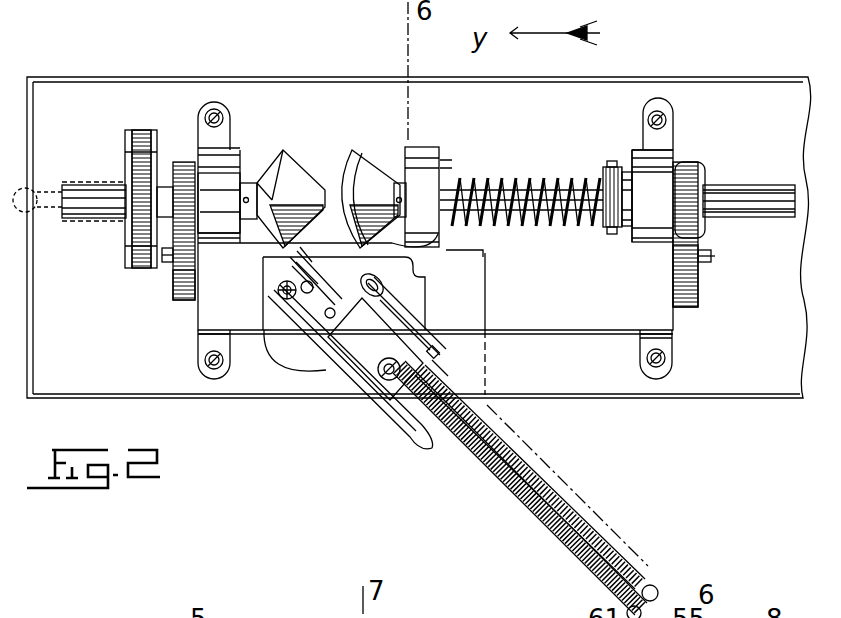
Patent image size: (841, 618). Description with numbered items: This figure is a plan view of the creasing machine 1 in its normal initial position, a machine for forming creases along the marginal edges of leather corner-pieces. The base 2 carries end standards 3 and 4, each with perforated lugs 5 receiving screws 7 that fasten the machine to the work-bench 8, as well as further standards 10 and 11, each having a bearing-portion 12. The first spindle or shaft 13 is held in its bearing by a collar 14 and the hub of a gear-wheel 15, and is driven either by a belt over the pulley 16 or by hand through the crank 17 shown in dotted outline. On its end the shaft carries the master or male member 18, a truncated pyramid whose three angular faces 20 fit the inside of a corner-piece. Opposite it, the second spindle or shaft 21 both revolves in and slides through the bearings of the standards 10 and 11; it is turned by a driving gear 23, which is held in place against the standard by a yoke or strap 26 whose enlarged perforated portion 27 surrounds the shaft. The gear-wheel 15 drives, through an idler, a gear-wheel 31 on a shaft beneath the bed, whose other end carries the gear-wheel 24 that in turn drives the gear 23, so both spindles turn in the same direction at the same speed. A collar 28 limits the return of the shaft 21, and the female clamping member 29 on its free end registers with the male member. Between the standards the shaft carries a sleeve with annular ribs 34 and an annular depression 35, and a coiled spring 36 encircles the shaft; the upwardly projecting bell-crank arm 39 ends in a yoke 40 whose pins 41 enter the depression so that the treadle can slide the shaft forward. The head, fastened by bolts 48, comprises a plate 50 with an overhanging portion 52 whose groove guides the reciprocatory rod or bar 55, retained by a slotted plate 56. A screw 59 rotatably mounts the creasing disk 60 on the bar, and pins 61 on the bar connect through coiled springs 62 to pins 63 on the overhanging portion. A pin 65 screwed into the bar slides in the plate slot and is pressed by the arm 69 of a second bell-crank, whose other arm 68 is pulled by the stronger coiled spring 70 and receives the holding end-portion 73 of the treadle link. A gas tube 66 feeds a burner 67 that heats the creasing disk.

The creasing machine 1 is at (418, 195).
The base 2 is at (205, 300).
The support or standard 3 is at (200, 336).
The support or standard 4 is at (647, 143).
The perforated ear or lug 5 is at (214, 110).
The screw 7 is at (205, 113).
The table or work-bench 8 is at (148, 95).
The support or standard 10 is at (418, 158).
The support or standard 11 is at (633, 158).
The bearing-portion 12 is at (226, 170).
The spindle or shaft 13 is at (110, 192).
The collar 14 is at (242, 196).
The gear-wheel 15 is at (185, 170).
The pulley 16 is at (131, 130).
The crank 17 is at (40, 206).
The master or male member 18 is at (278, 172).
The angularly disposed sides or faces 20 is at (291, 172).
The second spindle or shaft 21 is at (506, 192).
The driving gear 23 is at (704, 218).
The gear-wheel 24 is at (700, 287).
The yoke or strap 26 is at (657, 155).
The enlarged and perforated portion 27 is at (704, 187).
The collar 28 is at (398, 182).
The female corner-piece clamping member 29 is at (363, 170).
The gear-wheel 31 is at (178, 293).
The annular rib 34 is at (626, 188).
The annular depression 35 is at (582, 228).
The coiled spring 36 is at (468, 195).
The upwardly projecting arm 39 is at (224, 143).
The yoke or bifurcated end-member 40 is at (602, 185).
The inwardly projecting pin 41 is at (606, 165).
The bolt 48 is at (320, 313).
The plate 50 is at (296, 382).
The overhanging portion 52 is at (352, 382).
The rod or bar 55 is at (396, 283).
The plate 56 is at (375, 349).
The screw 59 is at (298, 275).
The creasing disk or plate 60 is at (306, 262).
The screw or pin 61 is at (660, 588).
The coiled spring 62 is at (502, 486).
The screw or pin 63 is at (420, 362).
The laterally projecting pin or arm 65 is at (442, 353).
The gas-conveying tube 66 is at (280, 316).
The burner 67 is at (278, 291).
The arm 68 is at (390, 300).
The arm 69 is at (446, 368).
The coiled spring 70 is at (380, 322).
The holding end-portion 73 is at (386, 280).